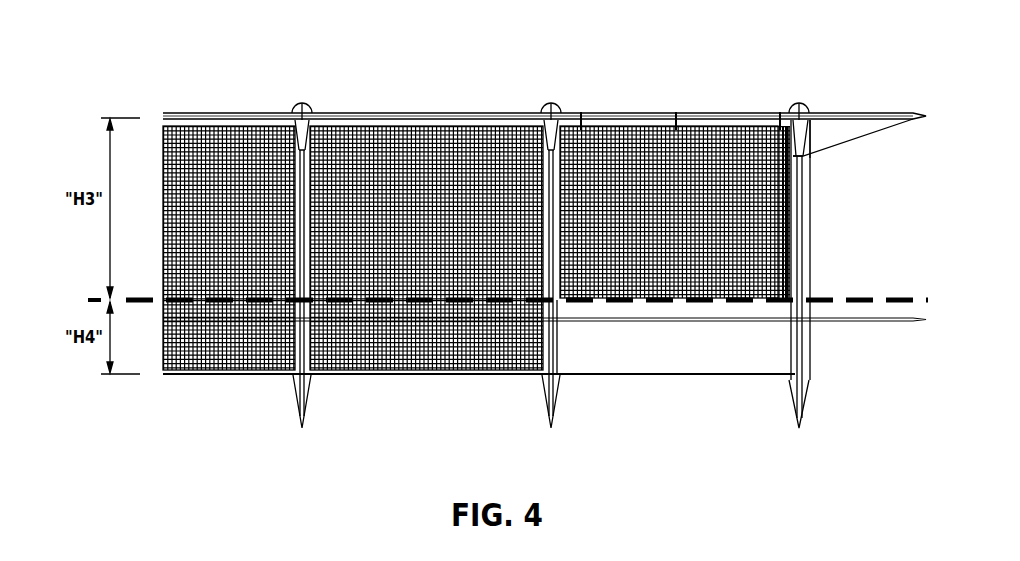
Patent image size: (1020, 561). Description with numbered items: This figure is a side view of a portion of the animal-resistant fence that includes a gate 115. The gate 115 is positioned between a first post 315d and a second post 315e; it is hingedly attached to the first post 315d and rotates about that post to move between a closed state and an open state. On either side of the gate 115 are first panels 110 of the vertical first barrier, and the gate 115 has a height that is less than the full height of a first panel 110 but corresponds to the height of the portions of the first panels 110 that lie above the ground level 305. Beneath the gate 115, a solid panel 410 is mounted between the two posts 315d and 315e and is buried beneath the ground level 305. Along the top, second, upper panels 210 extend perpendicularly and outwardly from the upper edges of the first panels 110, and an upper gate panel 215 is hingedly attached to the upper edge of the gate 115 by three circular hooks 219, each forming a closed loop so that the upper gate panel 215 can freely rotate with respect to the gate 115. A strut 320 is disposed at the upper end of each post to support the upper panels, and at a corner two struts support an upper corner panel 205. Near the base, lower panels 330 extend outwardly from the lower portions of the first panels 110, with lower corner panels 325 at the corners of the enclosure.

The second panel 210 is at (332, 107).
The first panel 110 is at (383, 158).
The lower panel 330 is at (440, 315).
The gate 115 is at (626, 140).
The upper gate panel 215 is at (626, 147).
The circular hook 219 is at (573, 120).
The first post 315d is at (548, 292).
The second post 315e is at (796, 260).
The strut 320 is at (808, 118).
The upper corner panel 205 is at (848, 108).
The ground level 305 is at (848, 290).
The lower corner panel 325 is at (900, 313).
The solid panel 410 is at (700, 345).